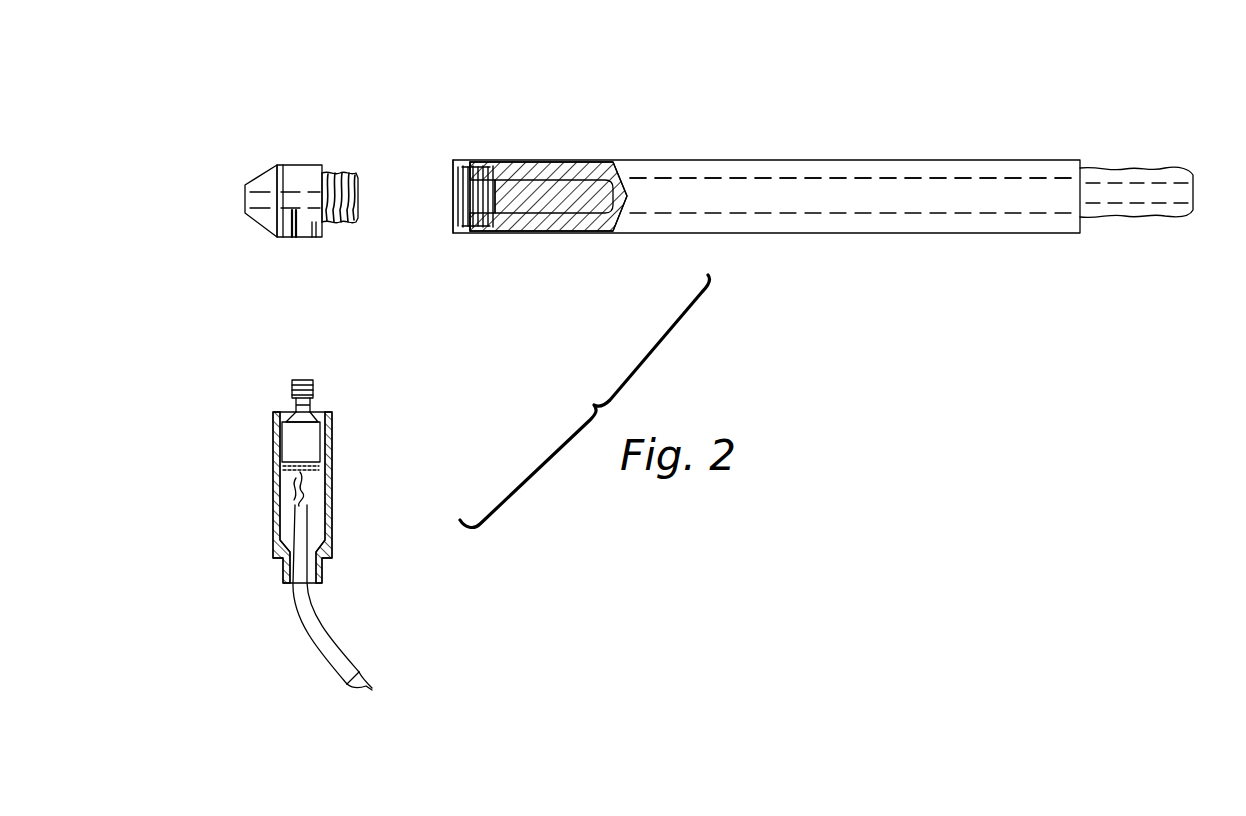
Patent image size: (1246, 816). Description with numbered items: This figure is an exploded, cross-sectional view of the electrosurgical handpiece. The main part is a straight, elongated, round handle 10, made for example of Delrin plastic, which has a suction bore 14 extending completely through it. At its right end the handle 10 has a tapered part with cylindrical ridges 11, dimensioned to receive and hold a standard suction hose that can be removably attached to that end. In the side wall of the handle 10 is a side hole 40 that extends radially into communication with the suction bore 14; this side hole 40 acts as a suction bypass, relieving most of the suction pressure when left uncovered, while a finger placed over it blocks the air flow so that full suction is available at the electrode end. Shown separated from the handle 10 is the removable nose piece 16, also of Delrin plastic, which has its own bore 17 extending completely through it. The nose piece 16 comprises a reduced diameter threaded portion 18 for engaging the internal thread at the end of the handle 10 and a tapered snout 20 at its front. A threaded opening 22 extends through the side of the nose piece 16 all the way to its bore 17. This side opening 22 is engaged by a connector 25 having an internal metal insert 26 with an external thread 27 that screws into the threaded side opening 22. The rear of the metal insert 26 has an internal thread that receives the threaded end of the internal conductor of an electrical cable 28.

The handle 10 is at (866, 222).
The tapered part with cylindrical ridges 11 is at (1133, 168).
The bore 14 is at (758, 180).
The nose piece 16 is at (288, 172).
The bore 17 is at (352, 160).
The reduced diameter threaded portion 18 is at (343, 225).
The tapered snout 20 is at (258, 222).
The threaded opening 22 is at (282, 235).
The connector 25 is at (275, 510).
The metal insert 26 is at (303, 446).
The external thread 27 is at (315, 388).
The electrical cable 28 is at (325, 666).
The side hole 40 is at (520, 162).